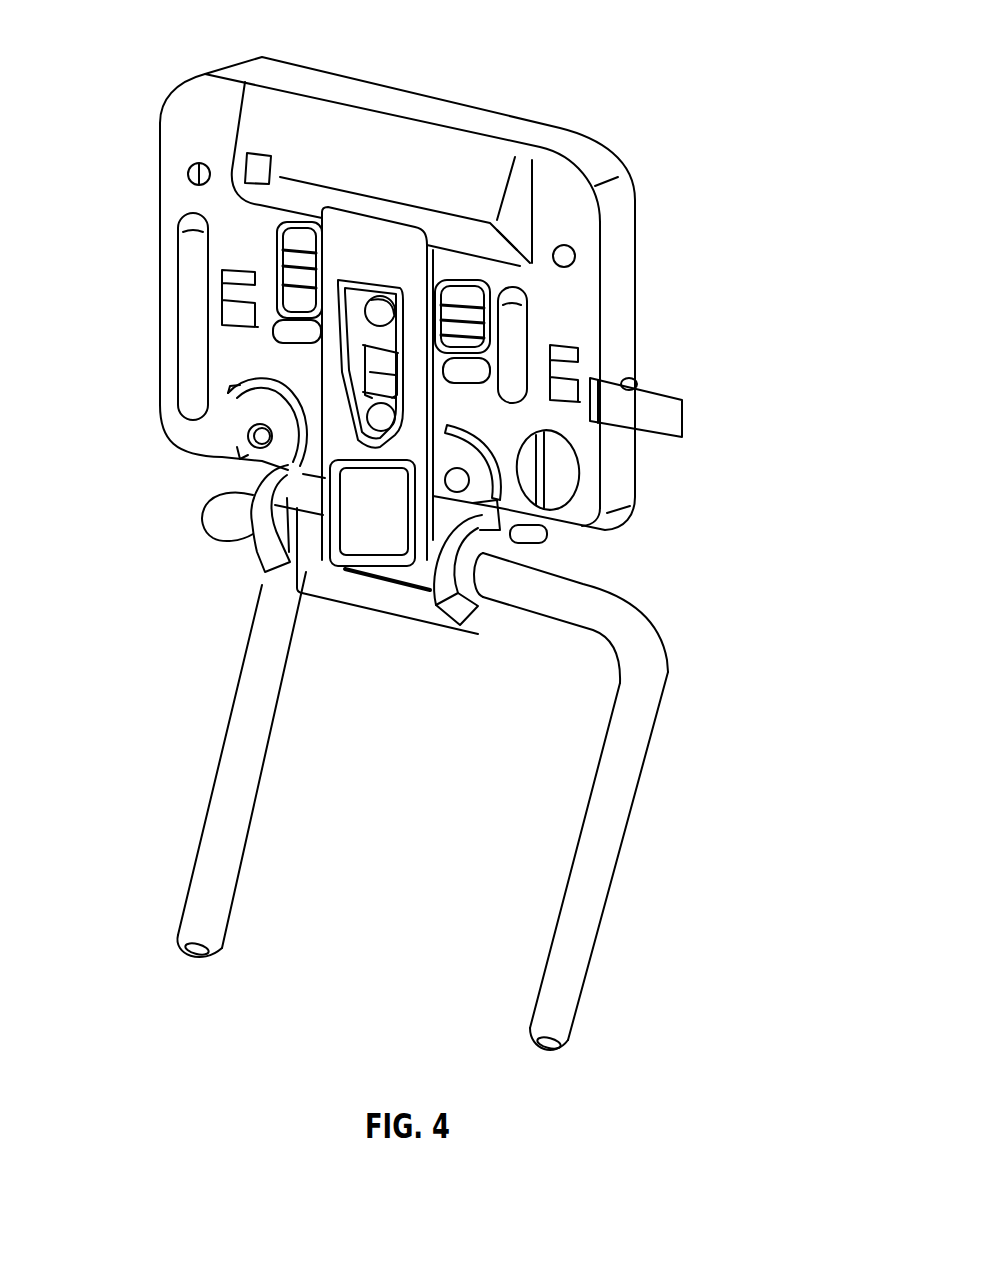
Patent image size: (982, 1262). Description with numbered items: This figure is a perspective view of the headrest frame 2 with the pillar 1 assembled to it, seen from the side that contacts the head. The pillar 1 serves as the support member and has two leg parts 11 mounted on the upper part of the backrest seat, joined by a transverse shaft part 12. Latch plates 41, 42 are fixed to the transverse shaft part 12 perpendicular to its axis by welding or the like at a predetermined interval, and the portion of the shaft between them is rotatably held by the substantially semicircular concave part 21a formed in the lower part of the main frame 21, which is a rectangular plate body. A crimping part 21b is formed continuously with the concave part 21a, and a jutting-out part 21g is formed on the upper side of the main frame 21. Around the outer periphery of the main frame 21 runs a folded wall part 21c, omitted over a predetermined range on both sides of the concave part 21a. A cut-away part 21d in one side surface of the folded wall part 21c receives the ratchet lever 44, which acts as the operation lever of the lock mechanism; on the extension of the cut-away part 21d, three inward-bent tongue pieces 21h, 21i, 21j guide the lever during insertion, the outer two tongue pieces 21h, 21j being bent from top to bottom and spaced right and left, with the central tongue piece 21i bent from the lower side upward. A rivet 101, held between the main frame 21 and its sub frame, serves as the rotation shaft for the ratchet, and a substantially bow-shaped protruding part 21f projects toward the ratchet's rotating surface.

The pillar 1 is at (668, 685).
The headrest frame 2 is at (129, 141).
The leg part 11 is at (632, 760).
The transverse shaft part 12 is at (585, 580).
The main frame 21 is at (598, 136).
The concave part 21a is at (308, 543).
The crimping part 21b is at (377, 595).
The folded wall part 21c is at (617, 252).
The cut-away part 21d is at (613, 425).
The protruding part 21f is at (232, 390).
The jutting-out part 21g is at (363, 150).
The tongue piece 21h is at (240, 293).
The tongue piece 21i is at (383, 377).
The tongue piece 21j is at (573, 370).
The latch plate 41 is at (240, 527).
The latch plate 42 is at (452, 592).
The ratchet lever 44 is at (663, 407).
The rivet 101 is at (252, 430).